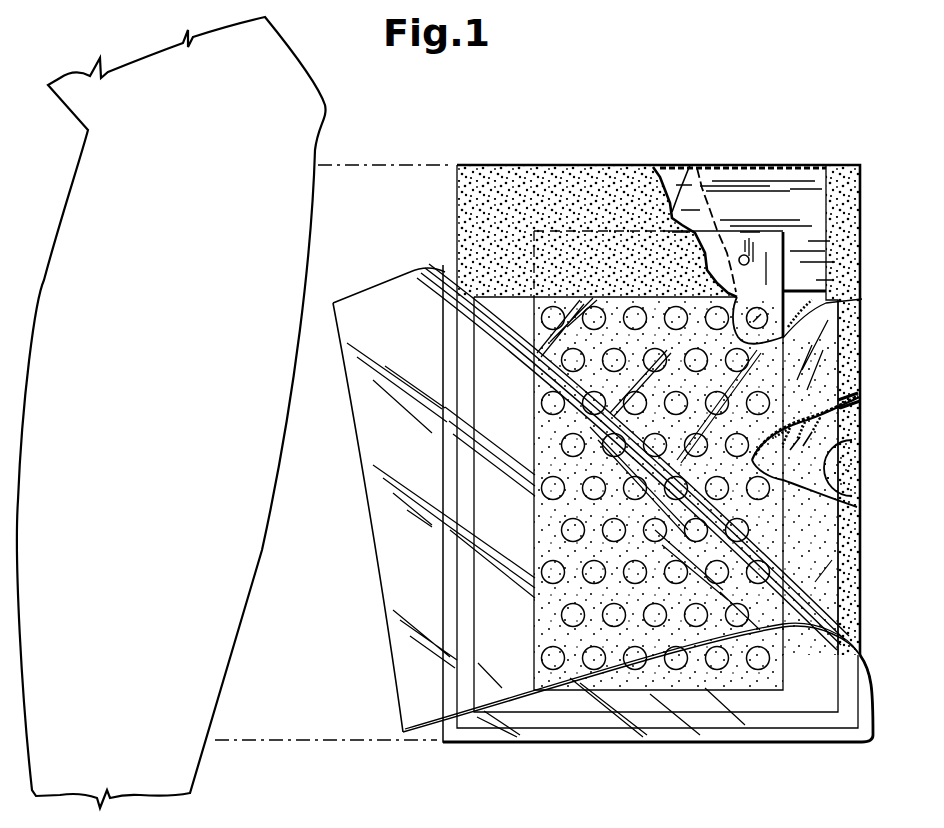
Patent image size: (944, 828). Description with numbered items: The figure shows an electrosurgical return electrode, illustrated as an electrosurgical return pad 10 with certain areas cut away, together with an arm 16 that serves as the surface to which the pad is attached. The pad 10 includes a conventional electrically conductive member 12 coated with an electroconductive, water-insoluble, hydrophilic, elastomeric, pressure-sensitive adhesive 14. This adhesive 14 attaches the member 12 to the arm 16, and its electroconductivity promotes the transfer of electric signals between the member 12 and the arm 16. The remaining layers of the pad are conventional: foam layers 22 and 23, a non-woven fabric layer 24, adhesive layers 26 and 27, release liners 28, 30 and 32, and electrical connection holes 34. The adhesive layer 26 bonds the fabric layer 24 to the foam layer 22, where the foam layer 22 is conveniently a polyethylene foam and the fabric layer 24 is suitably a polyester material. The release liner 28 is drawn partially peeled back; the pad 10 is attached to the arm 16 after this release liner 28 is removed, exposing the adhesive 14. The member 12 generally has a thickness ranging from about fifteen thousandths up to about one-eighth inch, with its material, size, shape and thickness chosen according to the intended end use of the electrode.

The electrosurgical return pad 10 is at (450, 157).
The electrically conductive member 12 is at (768, 302).
The electroconductive pressure-sensitive adhesive 14 is at (830, 304).
The arm 16 is at (322, 233).
The foam layer 22 is at (846, 481).
The foam layer 23 is at (681, 170).
The non-woven fabric layer 24 is at (838, 427).
The adhesive layer 26 is at (852, 456).
The adhesive layer 27 is at (692, 168).
The release liner 28 is at (386, 290).
The release liner 30 is at (700, 210).
The release liner 32 is at (823, 210).
The electrical connection holes 34 is at (750, 261).